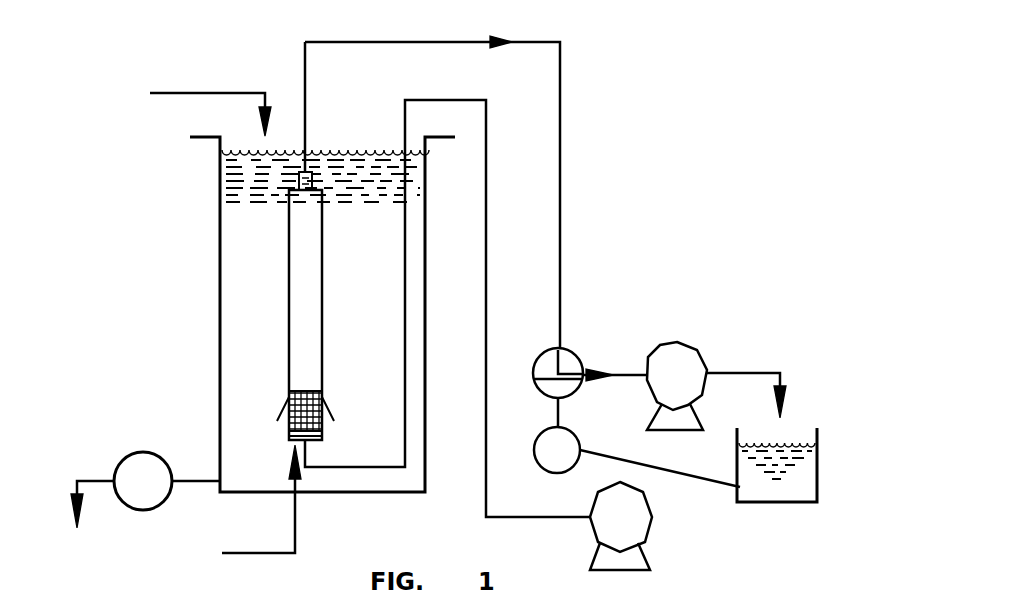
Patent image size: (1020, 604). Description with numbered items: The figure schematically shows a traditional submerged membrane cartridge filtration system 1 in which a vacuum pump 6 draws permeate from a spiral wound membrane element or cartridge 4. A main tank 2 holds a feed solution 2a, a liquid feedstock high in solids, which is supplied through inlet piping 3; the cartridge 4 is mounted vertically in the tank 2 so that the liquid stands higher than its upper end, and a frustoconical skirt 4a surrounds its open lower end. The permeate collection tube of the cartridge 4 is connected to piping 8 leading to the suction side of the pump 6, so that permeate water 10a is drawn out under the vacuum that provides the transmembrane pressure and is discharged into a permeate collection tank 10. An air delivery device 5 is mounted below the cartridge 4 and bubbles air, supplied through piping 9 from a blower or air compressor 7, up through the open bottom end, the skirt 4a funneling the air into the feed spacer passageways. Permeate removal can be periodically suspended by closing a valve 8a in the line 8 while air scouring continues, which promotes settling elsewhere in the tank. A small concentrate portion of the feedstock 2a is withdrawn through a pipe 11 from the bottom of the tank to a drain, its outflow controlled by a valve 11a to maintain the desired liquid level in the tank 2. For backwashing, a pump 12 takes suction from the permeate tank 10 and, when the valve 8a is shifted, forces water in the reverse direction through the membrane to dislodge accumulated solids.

The submerged membrane cartridge filtration system 1 is at (606, 72).
The main tank 2 is at (218, 318).
The feed solution 2a is at (386, 148).
The inlet piping 3 is at (210, 92).
The spiral wound membrane element or cartridge 4 is at (288, 280).
The frustoconical skirt 4a is at (283, 416).
The air delivery device 5 is at (262, 555).
The vacuum pump 6 is at (678, 342).
The blower or air compressor 7 is at (653, 517).
The piping 8 is at (562, 142).
The valve 8a is at (570, 352).
The piping 9 is at (487, 494).
The permeate collection tank 10 is at (818, 472).
The permeate water 10a is at (773, 485).
The pipe 11 is at (190, 484).
The valve 11a is at (145, 452).
The pump 12 is at (540, 470).